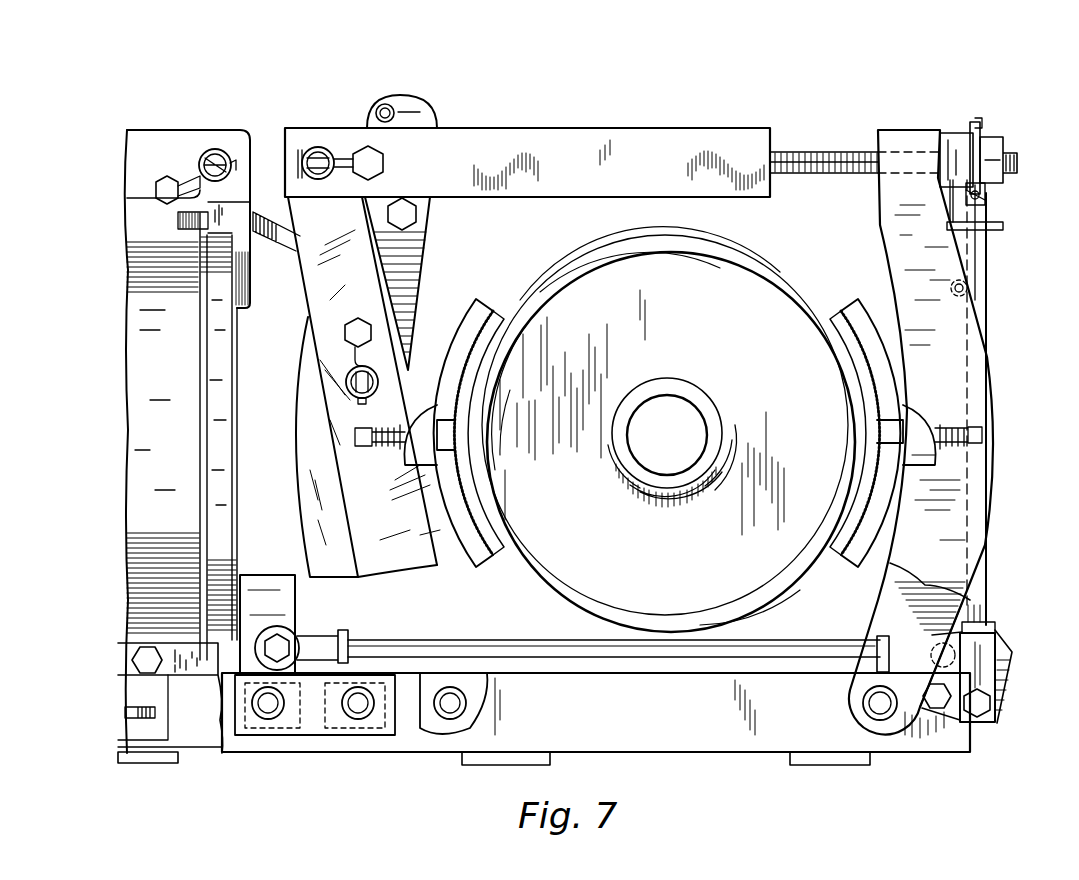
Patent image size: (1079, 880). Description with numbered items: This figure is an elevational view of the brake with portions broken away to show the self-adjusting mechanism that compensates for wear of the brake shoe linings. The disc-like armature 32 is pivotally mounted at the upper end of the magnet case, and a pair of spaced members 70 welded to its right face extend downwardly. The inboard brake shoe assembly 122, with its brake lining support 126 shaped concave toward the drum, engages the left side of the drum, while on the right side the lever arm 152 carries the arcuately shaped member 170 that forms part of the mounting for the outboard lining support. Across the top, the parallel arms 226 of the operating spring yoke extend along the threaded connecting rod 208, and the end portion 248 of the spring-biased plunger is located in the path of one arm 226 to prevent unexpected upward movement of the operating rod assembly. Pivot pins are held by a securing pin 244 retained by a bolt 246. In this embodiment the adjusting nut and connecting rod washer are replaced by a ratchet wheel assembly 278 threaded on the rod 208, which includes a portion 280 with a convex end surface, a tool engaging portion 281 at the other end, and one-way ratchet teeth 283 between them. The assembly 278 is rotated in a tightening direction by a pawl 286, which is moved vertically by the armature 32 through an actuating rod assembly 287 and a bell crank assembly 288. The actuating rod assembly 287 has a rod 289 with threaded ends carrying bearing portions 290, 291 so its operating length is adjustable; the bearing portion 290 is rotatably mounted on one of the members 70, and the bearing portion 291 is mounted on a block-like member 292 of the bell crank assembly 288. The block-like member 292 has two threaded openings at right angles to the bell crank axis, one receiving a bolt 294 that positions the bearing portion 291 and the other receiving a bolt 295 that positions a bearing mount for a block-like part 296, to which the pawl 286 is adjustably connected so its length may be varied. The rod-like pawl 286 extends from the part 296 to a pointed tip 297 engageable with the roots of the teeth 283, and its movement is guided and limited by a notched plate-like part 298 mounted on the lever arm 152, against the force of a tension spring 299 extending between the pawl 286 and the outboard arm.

The armature 32 is at (255, 447).
The spaced members 70 is at (258, 590).
The brake shoe assembly 122 is at (503, 308).
The brake lining support 126 is at (472, 310).
The lever arm 152 is at (905, 272).
The arcuately shaped member 170 is at (912, 410).
The connecting rod 208 is at (828, 152).
The arms 226 is at (628, 130).
The securing pin 244 is at (360, 366).
The bolt 246 is at (343, 335).
The end portion 248 is at (390, 103).
The ratchet wheel assembly 278 is at (992, 129).
The portion 280 is at (960, 135).
The tool engaging portion 281 is at (995, 140).
The ratchet teeth 283 is at (978, 122).
The pawl 286 is at (988, 247).
The actuating rod assembly 287 is at (680, 662).
The bell crank assembly 288 is at (1030, 666).
The rod 289 is at (555, 655).
The bearing portion 290 is at (338, 638).
The bearing portion 291 is at (880, 648).
The block-like member 292 is at (1008, 655).
The bolt 294 is at (998, 626).
The bolt 295 is at (981, 712).
The block-like part 296 is at (985, 680).
The pointed tip 297 is at (985, 198).
The plate-like part 298 is at (1003, 225).
The tension spring 299 is at (968, 289).